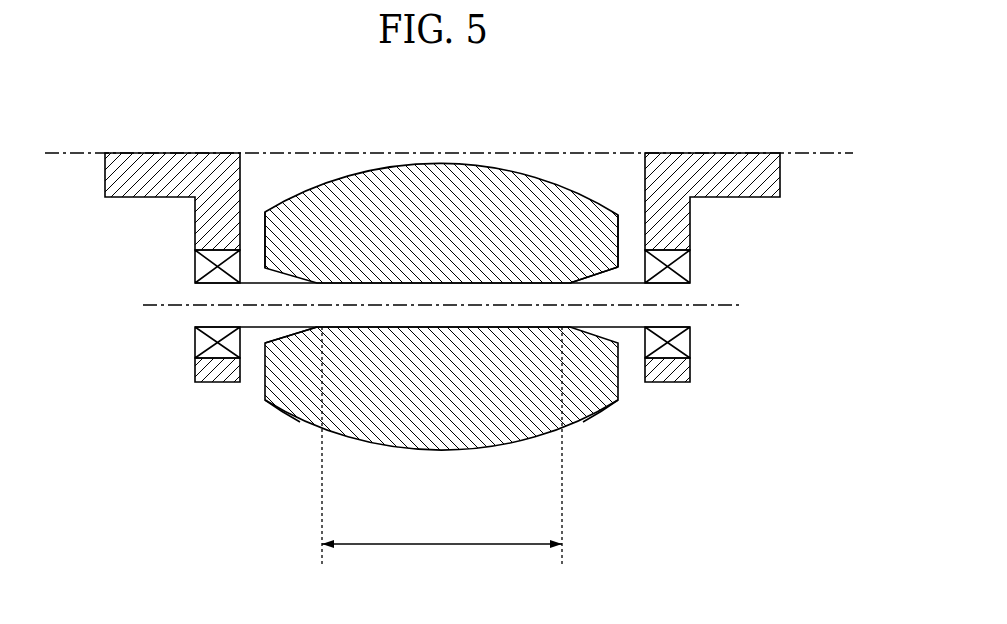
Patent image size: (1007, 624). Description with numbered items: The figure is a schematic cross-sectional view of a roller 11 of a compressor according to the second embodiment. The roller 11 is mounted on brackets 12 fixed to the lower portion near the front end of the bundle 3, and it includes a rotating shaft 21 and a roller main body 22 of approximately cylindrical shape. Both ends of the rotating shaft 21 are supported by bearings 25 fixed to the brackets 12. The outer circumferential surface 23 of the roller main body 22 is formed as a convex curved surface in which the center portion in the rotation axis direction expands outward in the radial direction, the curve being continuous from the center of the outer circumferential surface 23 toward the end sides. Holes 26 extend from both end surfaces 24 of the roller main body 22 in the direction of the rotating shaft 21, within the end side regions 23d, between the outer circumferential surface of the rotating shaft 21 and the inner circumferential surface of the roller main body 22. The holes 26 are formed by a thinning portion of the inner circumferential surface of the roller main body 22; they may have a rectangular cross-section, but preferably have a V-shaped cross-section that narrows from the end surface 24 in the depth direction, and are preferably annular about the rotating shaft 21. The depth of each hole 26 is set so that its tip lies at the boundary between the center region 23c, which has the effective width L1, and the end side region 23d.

The bundle 3 is at (60, 153).
The roller 11 is at (418, 265).
The brackets 12 is at (135, 178).
The rotating shaft 21 is at (195, 290).
The roller main body 22 is at (565, 212).
The outer circumferential surface 23 is at (443, 293).
The center region 23c is at (393, 442).
The end side regions 23d is at (290, 417).
The end surfaces 24 is at (265, 232).
The bearings 25 is at (200, 265).
The holes 26 is at (263, 333).
The effective width L1 is at (440, 544).